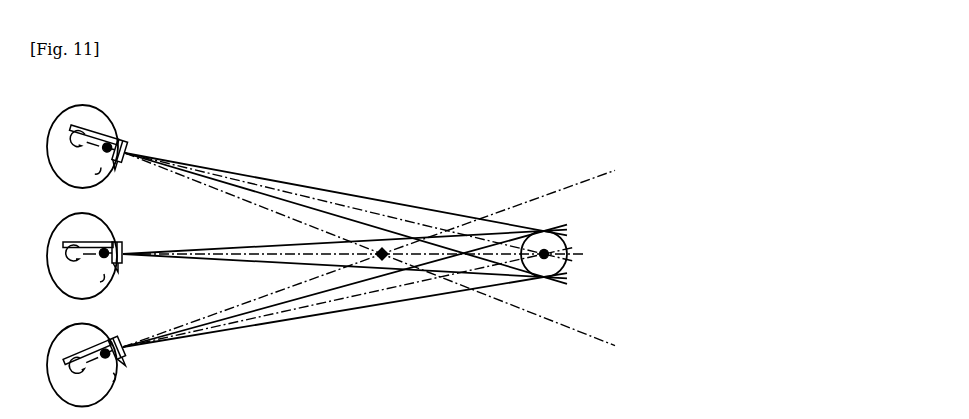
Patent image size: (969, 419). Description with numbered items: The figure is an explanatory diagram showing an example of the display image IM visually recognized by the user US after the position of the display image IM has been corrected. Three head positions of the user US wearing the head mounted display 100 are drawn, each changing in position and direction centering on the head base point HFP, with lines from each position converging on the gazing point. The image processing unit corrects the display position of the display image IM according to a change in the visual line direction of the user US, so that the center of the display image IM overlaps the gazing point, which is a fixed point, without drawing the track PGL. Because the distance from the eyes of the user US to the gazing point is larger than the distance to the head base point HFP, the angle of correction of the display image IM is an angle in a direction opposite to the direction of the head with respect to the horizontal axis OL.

The user US is at (96, 105).
The sound output device / earpiece 100 is at (122, 145).
The head base point HFP is at (382, 260).
The track PGL is at (602, 231).
The horizontal axis OL is at (583, 254).
The display image IM is at (573, 266).